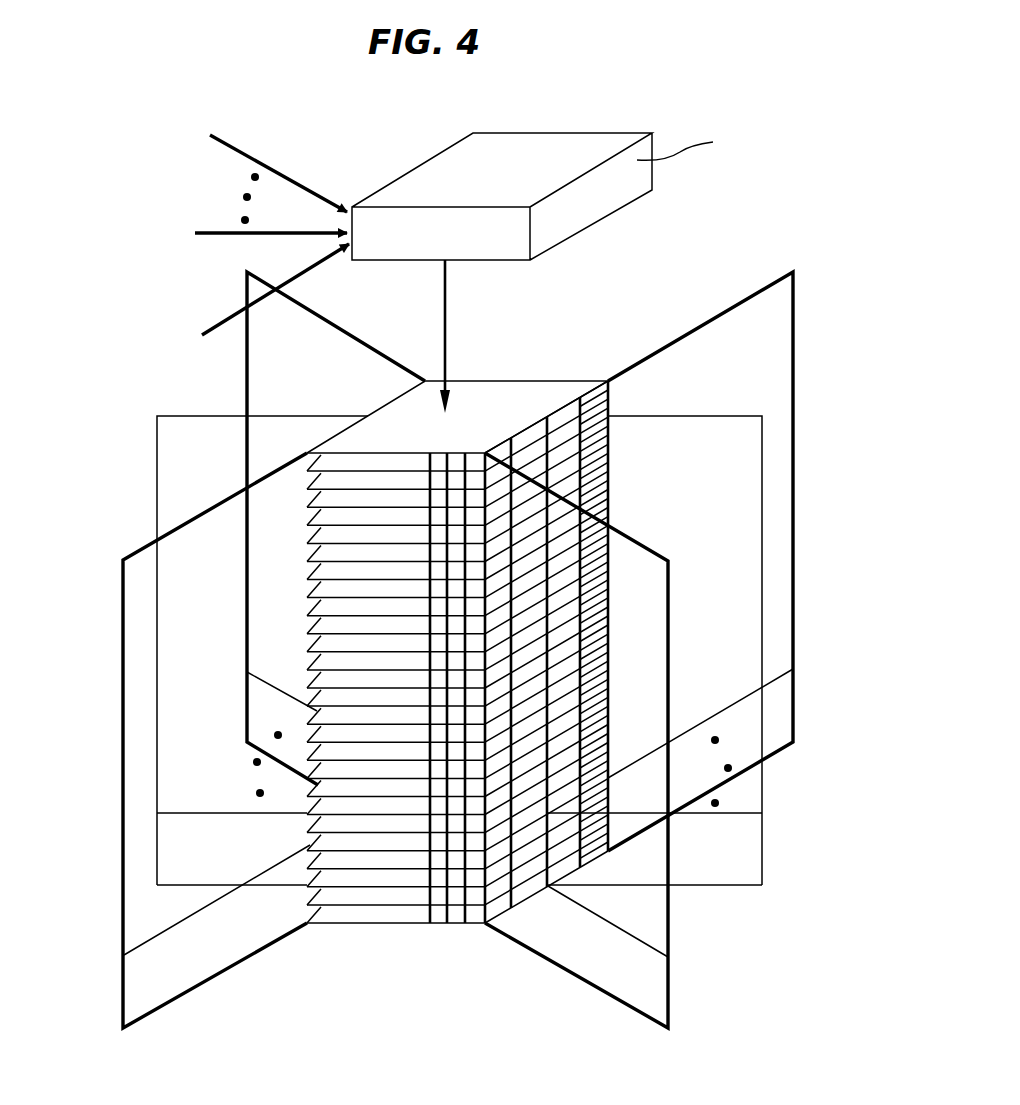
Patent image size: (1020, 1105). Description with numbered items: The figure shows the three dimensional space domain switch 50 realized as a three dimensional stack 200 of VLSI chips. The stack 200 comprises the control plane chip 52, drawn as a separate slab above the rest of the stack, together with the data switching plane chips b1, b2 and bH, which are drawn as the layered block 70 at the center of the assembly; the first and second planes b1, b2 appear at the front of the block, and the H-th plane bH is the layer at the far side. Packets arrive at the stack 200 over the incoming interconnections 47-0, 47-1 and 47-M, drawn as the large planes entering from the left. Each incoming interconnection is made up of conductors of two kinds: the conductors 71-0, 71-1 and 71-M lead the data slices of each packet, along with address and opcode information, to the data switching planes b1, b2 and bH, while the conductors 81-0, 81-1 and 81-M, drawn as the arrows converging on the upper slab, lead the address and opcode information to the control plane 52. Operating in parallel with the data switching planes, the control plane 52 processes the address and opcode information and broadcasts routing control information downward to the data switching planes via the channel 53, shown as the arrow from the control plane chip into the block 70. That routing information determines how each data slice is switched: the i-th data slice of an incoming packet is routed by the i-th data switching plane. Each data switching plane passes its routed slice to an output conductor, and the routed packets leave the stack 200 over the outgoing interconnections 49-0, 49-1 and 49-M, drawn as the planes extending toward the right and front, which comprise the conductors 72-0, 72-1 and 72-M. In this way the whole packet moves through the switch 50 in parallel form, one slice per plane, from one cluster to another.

The three dimensional stack 200 is at (745, 54).
The control plane 52 is at (528, 143).
The channel 53 is at (447, 347).
The conductor 81-M is at (270, 165).
The conductor 81-1 is at (233, 233).
The conductor 81-0 is at (240, 324).
The switching block 70 is at (452, 668).
The data switching plane bH is at (532, 393).
The data switching plane b1 is at (393, 910).
The data switching plane b2 is at (428, 918).
The incoming interconnection 47-0 is at (123, 1020).
The incoming interconnection 47-1 is at (155, 848).
The incoming interconnection 47-M is at (248, 728).
The conductor 71-0 is at (190, 913).
The conductor 71-1 is at (237, 813).
The conductor 71-M is at (270, 683).
The outgoing interconnection 49-0 is at (597, 987).
The outgoing interconnection 49-1 is at (735, 885).
The outgoing interconnection 49-M is at (793, 640).
The conductor 72-0 is at (647, 943).
The conductor 72-1 is at (735, 813).
The conductor 72-M is at (775, 683).
The three dimensional space domain switch 50 is at (275, 1072).